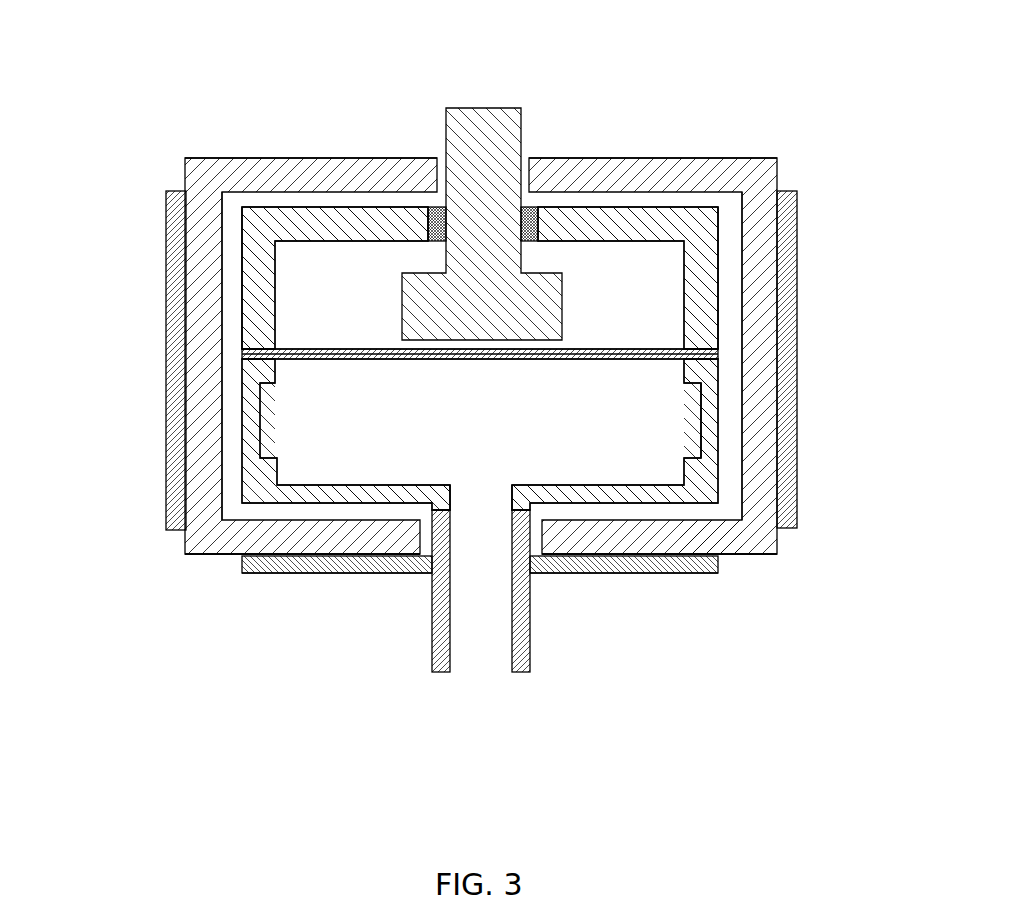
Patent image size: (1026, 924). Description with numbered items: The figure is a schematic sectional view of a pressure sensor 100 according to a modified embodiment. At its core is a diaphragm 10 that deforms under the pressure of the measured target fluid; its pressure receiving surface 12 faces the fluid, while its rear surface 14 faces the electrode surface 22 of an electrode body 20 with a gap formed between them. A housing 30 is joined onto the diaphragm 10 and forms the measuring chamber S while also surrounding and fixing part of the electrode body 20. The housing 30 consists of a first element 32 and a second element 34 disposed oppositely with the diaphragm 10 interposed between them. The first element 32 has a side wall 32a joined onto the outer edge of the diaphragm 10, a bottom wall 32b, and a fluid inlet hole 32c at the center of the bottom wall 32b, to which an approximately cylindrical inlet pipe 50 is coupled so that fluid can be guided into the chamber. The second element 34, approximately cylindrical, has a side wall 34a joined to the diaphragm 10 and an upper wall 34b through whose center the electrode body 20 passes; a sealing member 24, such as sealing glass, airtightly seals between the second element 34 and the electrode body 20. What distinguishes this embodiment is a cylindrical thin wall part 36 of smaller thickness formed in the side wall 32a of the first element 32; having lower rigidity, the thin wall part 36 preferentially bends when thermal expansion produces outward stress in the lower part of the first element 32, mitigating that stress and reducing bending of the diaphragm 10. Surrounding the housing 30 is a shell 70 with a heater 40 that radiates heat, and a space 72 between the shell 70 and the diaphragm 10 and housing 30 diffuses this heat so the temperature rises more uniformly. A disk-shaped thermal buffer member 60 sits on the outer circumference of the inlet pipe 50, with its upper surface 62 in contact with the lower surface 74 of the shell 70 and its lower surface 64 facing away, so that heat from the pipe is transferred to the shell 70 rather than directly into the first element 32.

The diaphragm 10 is at (615, 350).
The pressure receiving surface 12 is at (640, 360).
The rear surface 14 is at (660, 350).
The electrode body 20 is at (485, 230).
The electrode surface 22 is at (535, 360).
The sealing member 24 is at (428, 208).
The housing 30 is at (42, 345).
The first element 32 is at (79, 397).
The side wall 32a is at (263, 467).
The bottom wall 32b is at (348, 494).
The fluid inlet hole 32c is at (482, 490).
The second element 34 is at (80, 335).
The side wall 34a is at (265, 297).
The upper wall 34b is at (345, 225).
The thin wall part 36 is at (710, 430).
The heater 40 is at (787, 480).
The inlet pipe 50 is at (523, 628).
The thermal buffer member 60 is at (670, 565).
The upper surface 62 is at (700, 553).
The lower surface 64 is at (595, 573).
The shell 70 is at (202, 223).
The space 72 is at (235, 243).
The lower surface 74 is at (750, 555).
The pressure sensor 100 is at (757, 117).